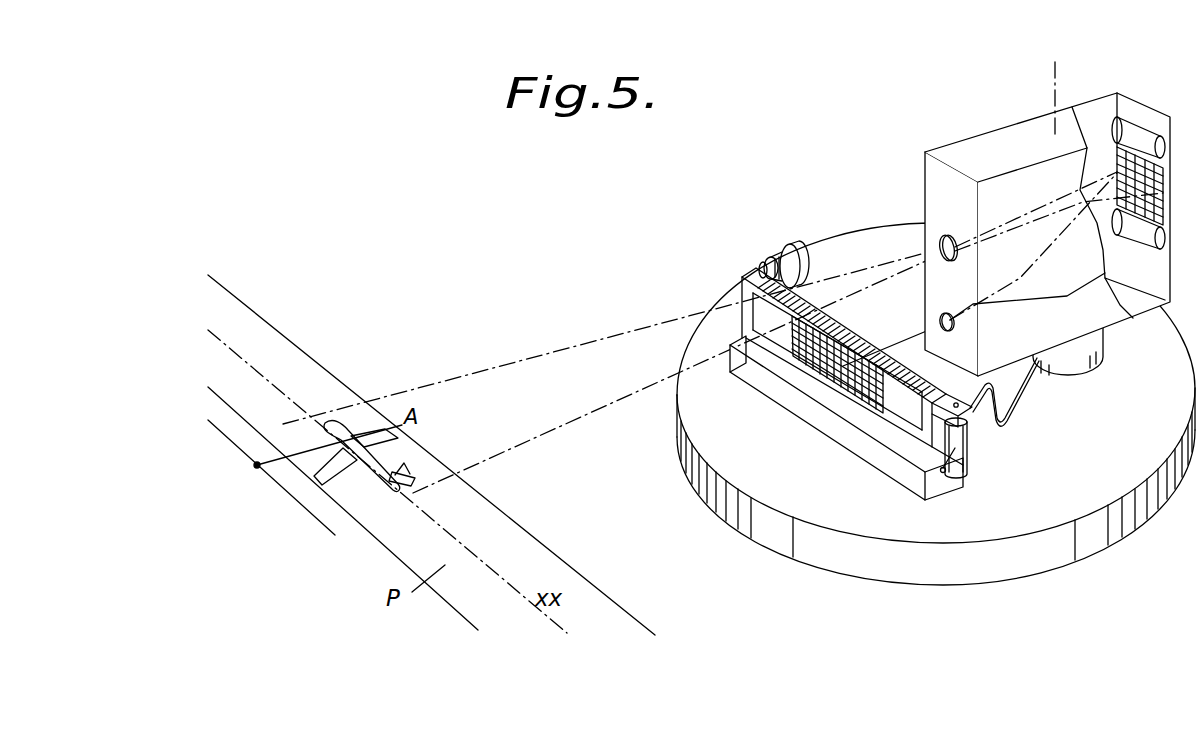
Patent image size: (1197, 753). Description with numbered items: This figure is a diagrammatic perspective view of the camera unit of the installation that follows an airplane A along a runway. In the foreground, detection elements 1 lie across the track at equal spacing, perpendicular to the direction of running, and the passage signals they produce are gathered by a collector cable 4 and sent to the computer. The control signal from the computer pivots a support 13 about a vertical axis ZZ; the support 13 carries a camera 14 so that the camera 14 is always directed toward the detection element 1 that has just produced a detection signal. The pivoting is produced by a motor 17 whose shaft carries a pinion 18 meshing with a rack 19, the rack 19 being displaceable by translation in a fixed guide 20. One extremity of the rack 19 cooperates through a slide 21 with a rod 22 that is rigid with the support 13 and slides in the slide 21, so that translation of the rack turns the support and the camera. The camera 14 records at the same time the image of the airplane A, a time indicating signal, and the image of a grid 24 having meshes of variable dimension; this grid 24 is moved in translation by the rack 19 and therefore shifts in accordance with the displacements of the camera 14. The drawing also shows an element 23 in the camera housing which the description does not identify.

The detection element 1 is at (306, 447).
The collector cable 4 is at (324, 527).
The support 13 is at (1086, 343).
The camera 14 is at (1032, 137).
The motor 17 is at (790, 262).
The pinion 18 is at (768, 264).
The rack 19 is at (760, 273).
The fixed guide 20 is at (866, 424).
The slide 21 is at (969, 443).
The rod 22 is at (928, 471).
The rollers 23 is at (1097, 121).
The grid 24 is at (838, 368).